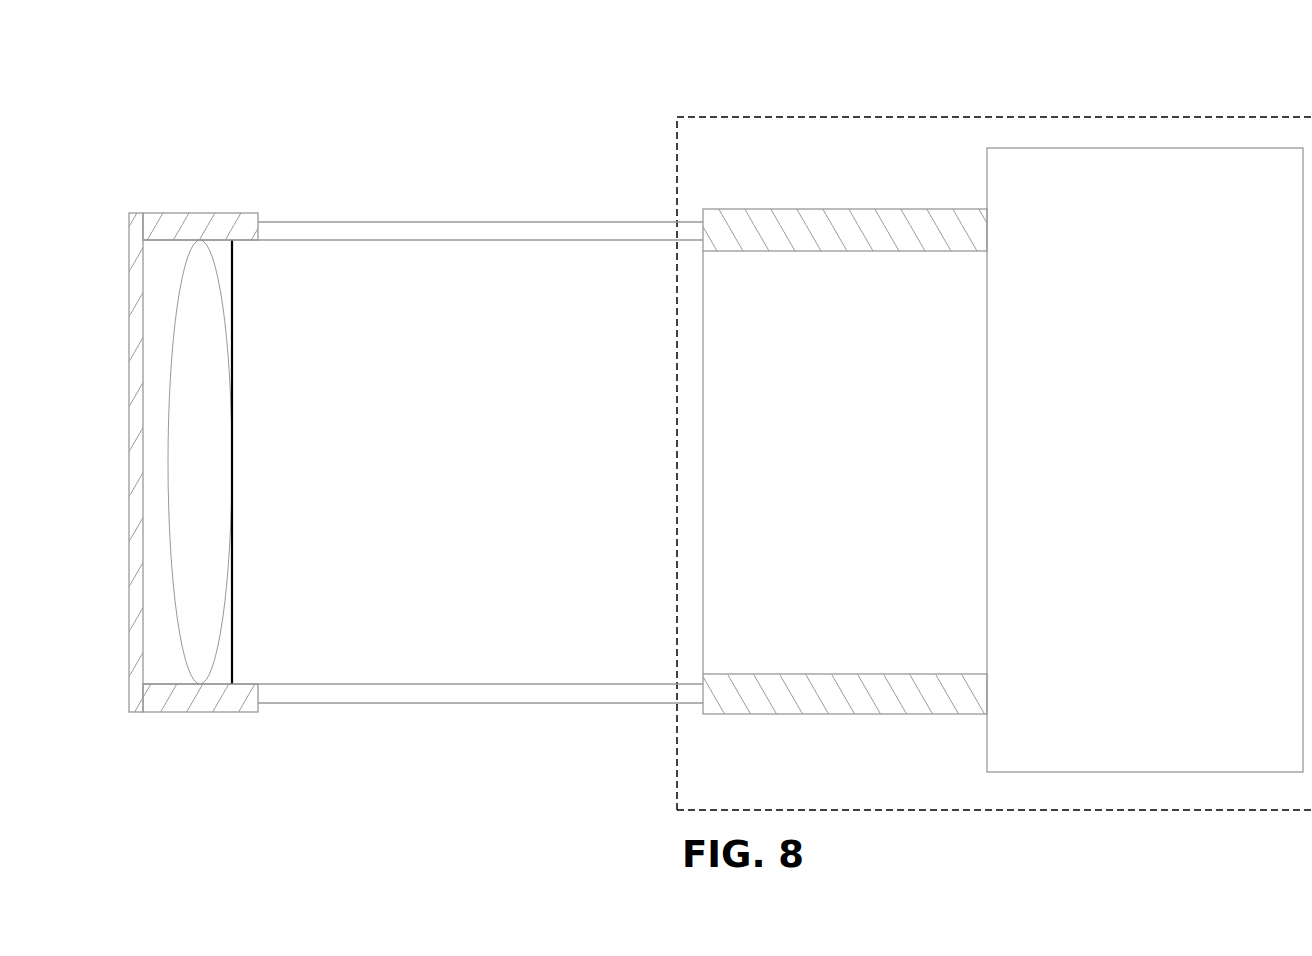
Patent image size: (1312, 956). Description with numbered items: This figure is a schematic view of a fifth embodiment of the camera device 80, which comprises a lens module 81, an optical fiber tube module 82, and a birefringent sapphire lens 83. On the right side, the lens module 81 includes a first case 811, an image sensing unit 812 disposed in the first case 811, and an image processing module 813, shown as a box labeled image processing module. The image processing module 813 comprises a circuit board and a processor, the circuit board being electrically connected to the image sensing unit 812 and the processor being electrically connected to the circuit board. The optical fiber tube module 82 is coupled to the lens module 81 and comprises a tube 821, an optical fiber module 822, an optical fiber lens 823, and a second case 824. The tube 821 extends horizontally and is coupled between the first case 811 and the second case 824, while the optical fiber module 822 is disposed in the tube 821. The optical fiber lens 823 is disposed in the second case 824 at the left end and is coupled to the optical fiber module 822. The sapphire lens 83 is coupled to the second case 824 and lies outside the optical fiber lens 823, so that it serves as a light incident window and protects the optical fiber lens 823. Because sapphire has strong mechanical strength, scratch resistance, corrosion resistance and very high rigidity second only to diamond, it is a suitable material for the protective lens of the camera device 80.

The camera device 80 is at (646, 100).
The lens module 81 is at (1130, 72).
The first case 811 is at (841, 232).
The image sensing unit 812 is at (928, 325).
The image processing module 813 is at (1083, 182).
The optical fiber tube module 82 is at (382, 153).
The tube 821 is at (318, 233).
The optical fiber module 822 is at (366, 283).
The optical fiber lens 823 is at (207, 262).
The second case 824 is at (160, 228).
The sapphire lens 83 is at (136, 284).